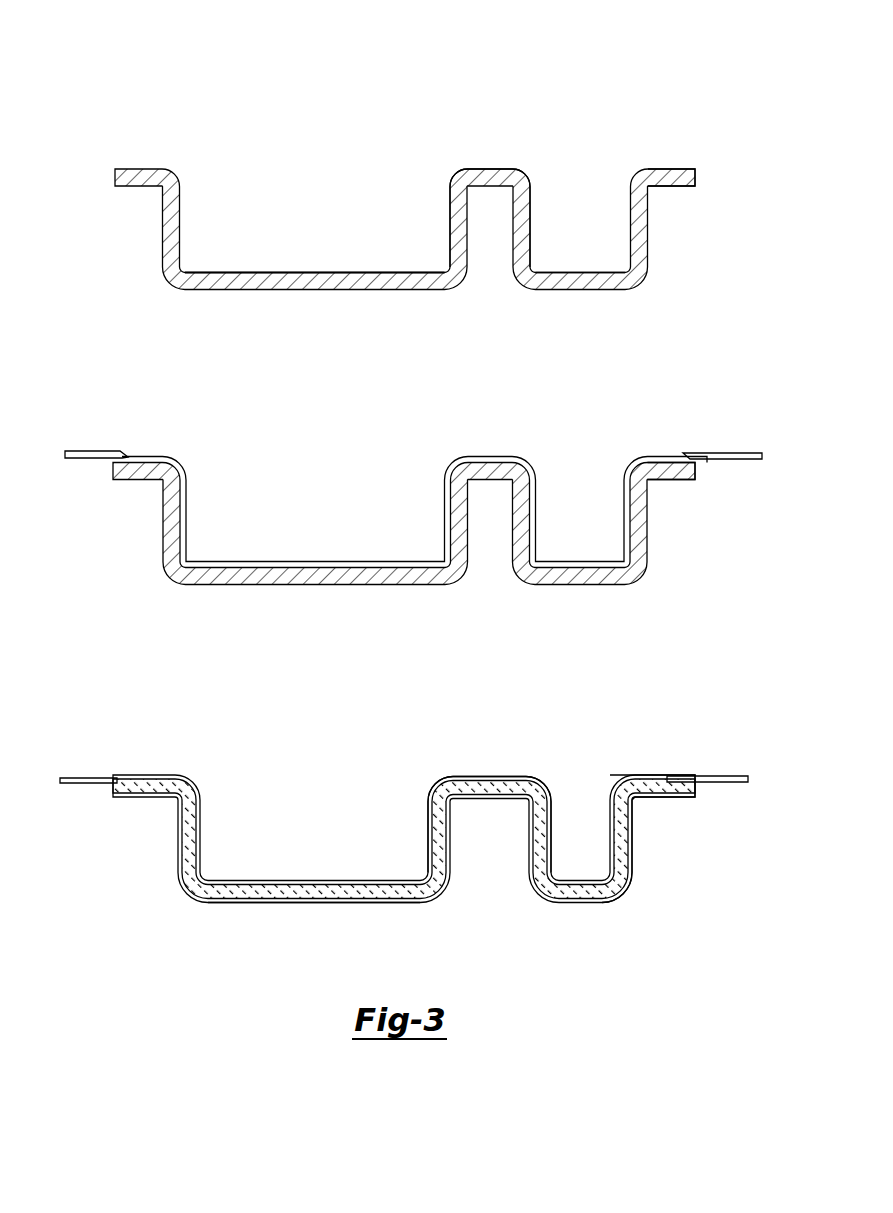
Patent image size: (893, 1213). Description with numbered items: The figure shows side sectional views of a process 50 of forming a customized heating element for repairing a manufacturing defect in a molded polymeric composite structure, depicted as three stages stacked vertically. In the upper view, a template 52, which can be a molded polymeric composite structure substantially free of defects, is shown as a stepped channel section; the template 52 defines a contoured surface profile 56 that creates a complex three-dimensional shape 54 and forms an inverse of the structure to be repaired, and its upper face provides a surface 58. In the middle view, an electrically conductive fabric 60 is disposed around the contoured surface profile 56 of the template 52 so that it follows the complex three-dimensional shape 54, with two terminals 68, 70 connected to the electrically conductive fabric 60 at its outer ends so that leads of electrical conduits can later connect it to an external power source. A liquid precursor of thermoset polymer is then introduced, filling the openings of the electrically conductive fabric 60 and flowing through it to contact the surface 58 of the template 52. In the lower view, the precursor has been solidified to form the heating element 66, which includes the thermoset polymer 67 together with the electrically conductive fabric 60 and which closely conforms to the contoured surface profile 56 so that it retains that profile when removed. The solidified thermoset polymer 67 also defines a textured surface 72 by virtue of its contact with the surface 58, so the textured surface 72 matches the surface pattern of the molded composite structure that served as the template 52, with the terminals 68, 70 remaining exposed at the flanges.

The process 50 is at (154, 91).
The template 52 is at (697, 178).
The complex three-dimensional shape 54 is at (356, 243).
The contoured surface profile 56 is at (594, 208).
The surface 58 is at (291, 272).
The electrically conductive fabric 60 is at (658, 458).
The heating element 66 is at (370, 833).
The thermoset polymer 67 is at (578, 880).
The terminal 68 is at (75, 452).
The terminal 70 is at (745, 456).
The textured surface 72 is at (310, 903).